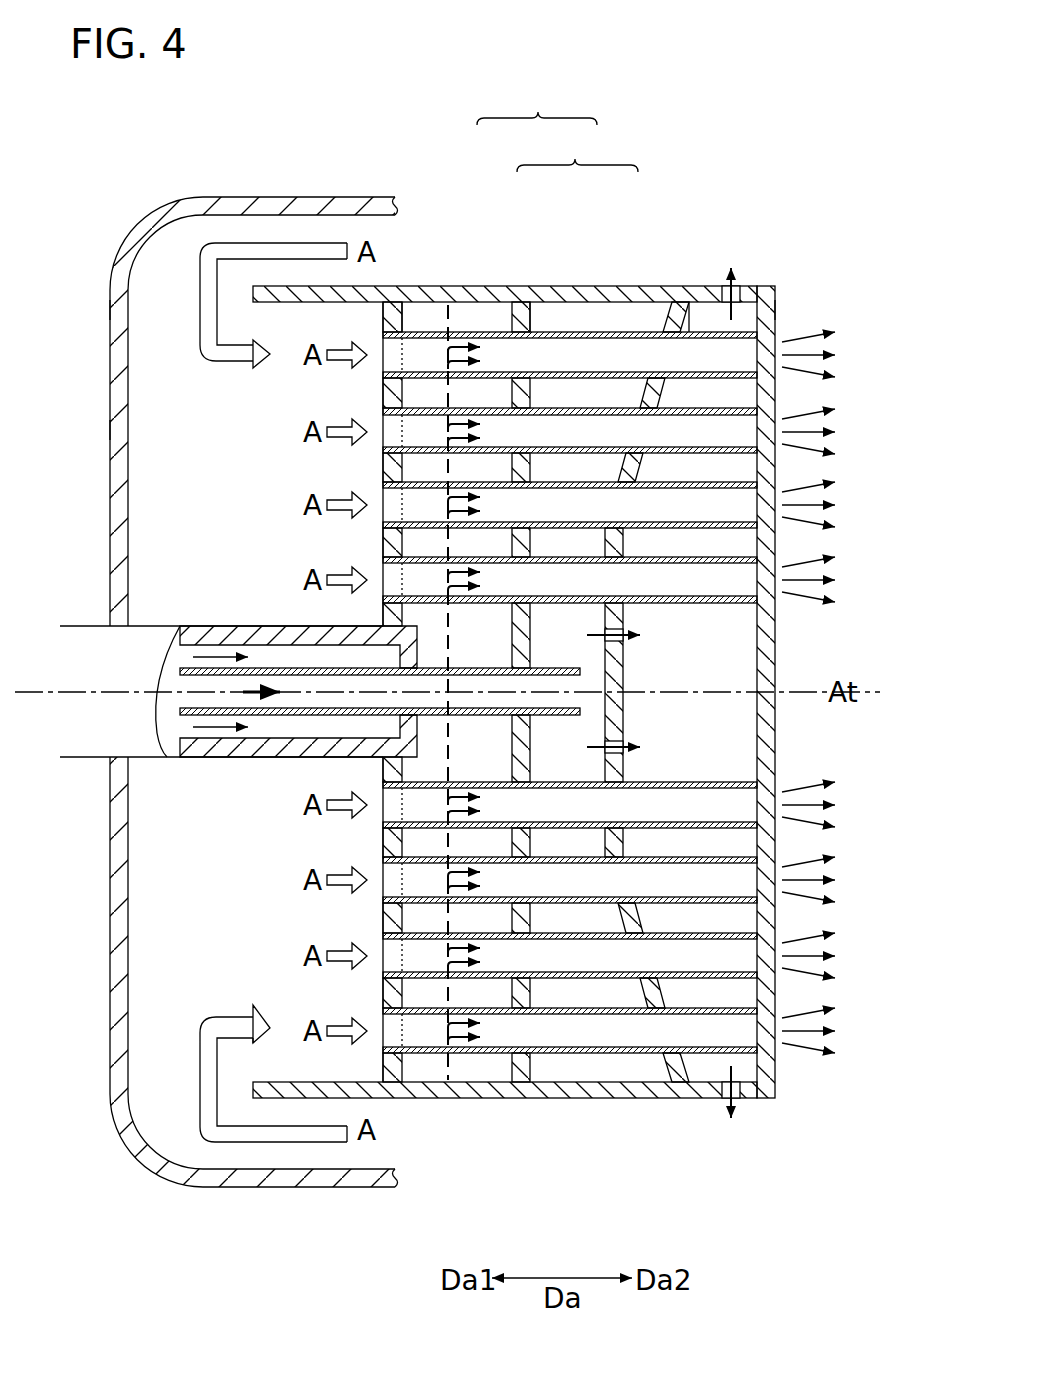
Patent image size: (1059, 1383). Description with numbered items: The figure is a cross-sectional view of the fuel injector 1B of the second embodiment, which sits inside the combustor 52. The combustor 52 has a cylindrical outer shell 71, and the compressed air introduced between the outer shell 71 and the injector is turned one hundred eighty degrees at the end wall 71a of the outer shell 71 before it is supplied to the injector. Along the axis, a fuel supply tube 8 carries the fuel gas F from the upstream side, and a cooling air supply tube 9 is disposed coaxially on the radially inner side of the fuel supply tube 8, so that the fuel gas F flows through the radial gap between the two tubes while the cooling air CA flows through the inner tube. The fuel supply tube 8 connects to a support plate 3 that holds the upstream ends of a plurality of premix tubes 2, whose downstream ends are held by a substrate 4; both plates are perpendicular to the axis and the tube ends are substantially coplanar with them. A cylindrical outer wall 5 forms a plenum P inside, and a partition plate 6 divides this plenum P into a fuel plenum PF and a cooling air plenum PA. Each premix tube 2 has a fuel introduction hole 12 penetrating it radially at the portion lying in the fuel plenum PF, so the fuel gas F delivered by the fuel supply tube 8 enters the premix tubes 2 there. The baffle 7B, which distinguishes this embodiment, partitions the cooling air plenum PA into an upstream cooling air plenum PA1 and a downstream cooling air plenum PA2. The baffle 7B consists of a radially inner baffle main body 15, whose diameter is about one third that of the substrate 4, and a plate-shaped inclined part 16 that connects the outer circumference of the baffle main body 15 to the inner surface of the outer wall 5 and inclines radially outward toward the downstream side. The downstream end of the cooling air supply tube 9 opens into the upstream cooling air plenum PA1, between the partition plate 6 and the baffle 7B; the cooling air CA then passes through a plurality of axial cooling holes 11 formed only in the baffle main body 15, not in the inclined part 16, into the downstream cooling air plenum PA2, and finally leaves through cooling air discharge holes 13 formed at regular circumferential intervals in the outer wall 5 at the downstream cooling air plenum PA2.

The fuel injector 1B is at (822, 176).
The premix tube 2 is at (772, 333).
The support plate 3 is at (390, 388).
The substrate 4 is at (770, 388).
The outer wall 5 is at (530, 1098).
The partition plate 6 is at (515, 462).
The baffle 7B is at (625, 995).
The fuel supply tube 8 is at (205, 745).
The cooling air supply tube 9 is at (205, 640).
The cooling hole 11 is at (622, 640).
The fuel introduction hole 12 is at (452, 320).
The cooling air discharge hole 13 is at (733, 287).
The baffle main body 15 is at (618, 715).
The inclined part 16 is at (655, 995).
The combustor 52 is at (150, 182).
The outer shell 71 is at (312, 200).
The end wall 71a is at (110, 425).
The plenum P is at (537, 98).
The fuel plenum PF is at (482, 315).
The cooling air plenum PA is at (577, 148).
The upstream cooling air plenum PA1 is at (600, 315).
The downstream cooling air plenum PA2 is at (727, 317).
The fuel gas F is at (222, 655).
The cooling air CA is at (262, 700).